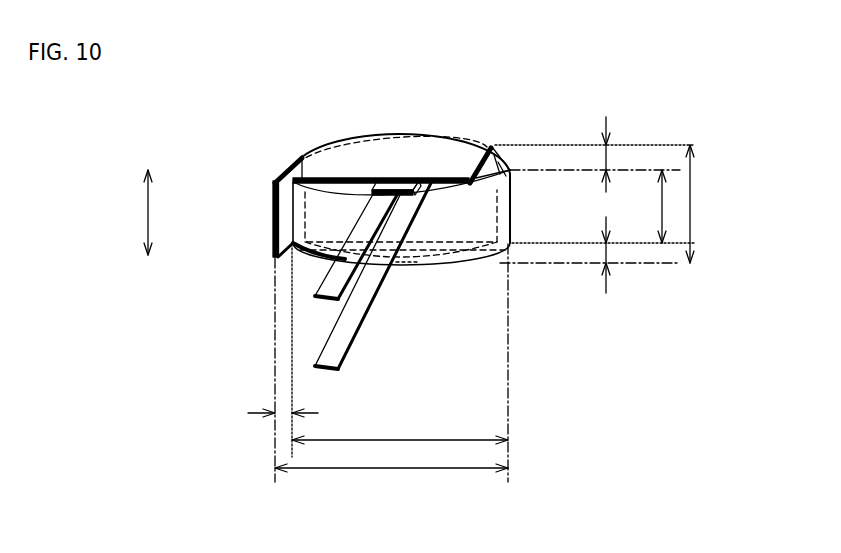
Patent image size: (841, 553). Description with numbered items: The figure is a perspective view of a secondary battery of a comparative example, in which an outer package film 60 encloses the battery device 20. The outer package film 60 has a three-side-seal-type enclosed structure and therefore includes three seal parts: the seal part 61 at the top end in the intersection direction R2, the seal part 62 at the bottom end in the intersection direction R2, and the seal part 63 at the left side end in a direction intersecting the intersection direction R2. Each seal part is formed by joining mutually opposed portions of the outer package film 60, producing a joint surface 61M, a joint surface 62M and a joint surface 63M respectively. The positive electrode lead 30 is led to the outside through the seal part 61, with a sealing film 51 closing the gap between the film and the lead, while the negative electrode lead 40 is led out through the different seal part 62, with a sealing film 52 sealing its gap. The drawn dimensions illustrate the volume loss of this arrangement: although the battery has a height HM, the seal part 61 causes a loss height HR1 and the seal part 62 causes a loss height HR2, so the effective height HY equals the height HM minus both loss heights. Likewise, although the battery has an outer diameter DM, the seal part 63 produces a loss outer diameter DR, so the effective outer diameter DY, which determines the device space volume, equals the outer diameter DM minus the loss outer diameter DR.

The battery device 20 is at (513, 225).
The positive electrode lead 30 is at (333, 288).
The negative electrode lead 40 is at (348, 325).
The sealing film 51 is at (400, 185).
The sealing film 52 is at (409, 268).
The outer package film 60 is at (510, 188).
The seal part 61 is at (402, 143).
The joint surface 61M is at (367, 137).
The seal part 62 is at (407, 265).
The joint surface 62M is at (402, 293).
The seal part 63 is at (268, 182).
The joint surface 63M is at (284, 212).
The height HM is at (690, 204).
The effective height HY is at (662, 207).
The loss height HR1 is at (607, 157).
The loss height HR2 is at (607, 253).
The outer diameter DM is at (397, 470).
The effective outer diameter DY is at (397, 438).
The loss outer diameter DR is at (285, 412).
The intersection direction R2 is at (148, 213).